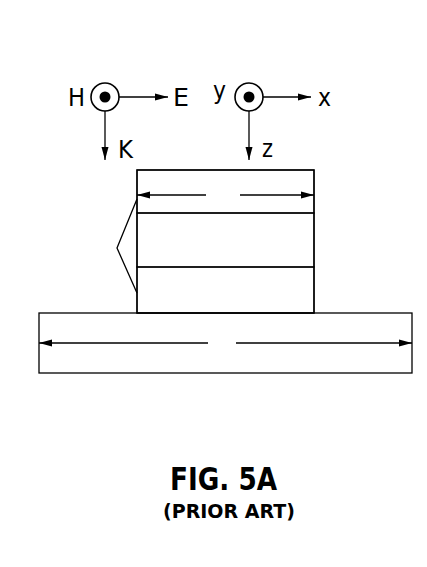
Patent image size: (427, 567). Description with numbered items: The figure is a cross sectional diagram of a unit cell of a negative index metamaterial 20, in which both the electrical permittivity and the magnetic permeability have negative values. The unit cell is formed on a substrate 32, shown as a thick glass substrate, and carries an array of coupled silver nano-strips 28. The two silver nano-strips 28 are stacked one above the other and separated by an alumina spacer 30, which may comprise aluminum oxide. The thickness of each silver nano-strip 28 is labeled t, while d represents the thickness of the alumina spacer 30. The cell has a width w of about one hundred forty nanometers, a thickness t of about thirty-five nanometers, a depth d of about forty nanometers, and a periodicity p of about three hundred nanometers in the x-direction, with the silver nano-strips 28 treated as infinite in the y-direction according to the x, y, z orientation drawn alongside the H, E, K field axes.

The metamaterial 20 is at (368, 103).
The silver nano-strips 28 is at (137, 177).
The alumina spacer 30 is at (147, 233).
The substrate 32 is at (62, 368).